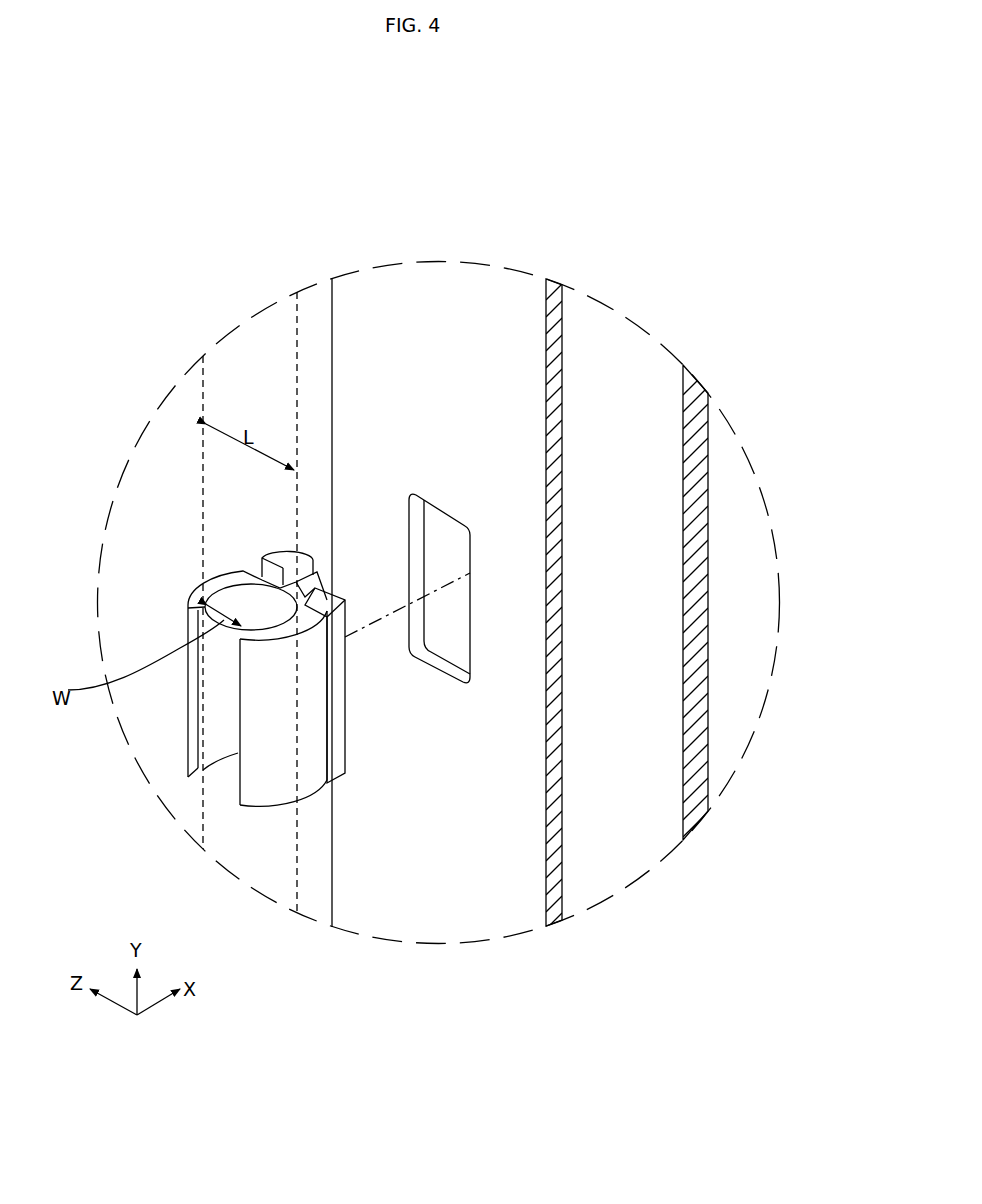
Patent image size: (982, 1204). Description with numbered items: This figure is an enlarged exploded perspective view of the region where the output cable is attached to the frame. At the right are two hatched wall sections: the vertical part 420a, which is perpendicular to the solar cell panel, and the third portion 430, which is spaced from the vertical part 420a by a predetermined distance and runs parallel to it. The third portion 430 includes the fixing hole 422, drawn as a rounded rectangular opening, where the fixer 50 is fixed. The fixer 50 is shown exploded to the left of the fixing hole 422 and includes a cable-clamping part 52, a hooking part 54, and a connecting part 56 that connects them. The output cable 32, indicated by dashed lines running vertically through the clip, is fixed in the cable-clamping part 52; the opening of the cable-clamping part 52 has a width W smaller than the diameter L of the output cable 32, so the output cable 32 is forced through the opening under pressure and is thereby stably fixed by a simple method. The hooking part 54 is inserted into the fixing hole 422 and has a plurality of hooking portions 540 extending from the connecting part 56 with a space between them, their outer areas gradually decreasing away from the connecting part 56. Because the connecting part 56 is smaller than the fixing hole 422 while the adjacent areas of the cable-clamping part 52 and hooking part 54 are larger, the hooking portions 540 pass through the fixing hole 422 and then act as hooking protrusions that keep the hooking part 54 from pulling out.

The output cable 32 is at (203, 833).
The fixer 50 is at (357, 764).
The cable-clamping part 52 is at (275, 732).
The hooking part 54 is at (345, 580).
The connecting part 56 is at (330, 580).
The hooking portions 540 is at (285, 567).
The fixing hole 422 is at (455, 562).
The vertical part 420a is at (645, 742).
The third portion 430 is at (507, 868).